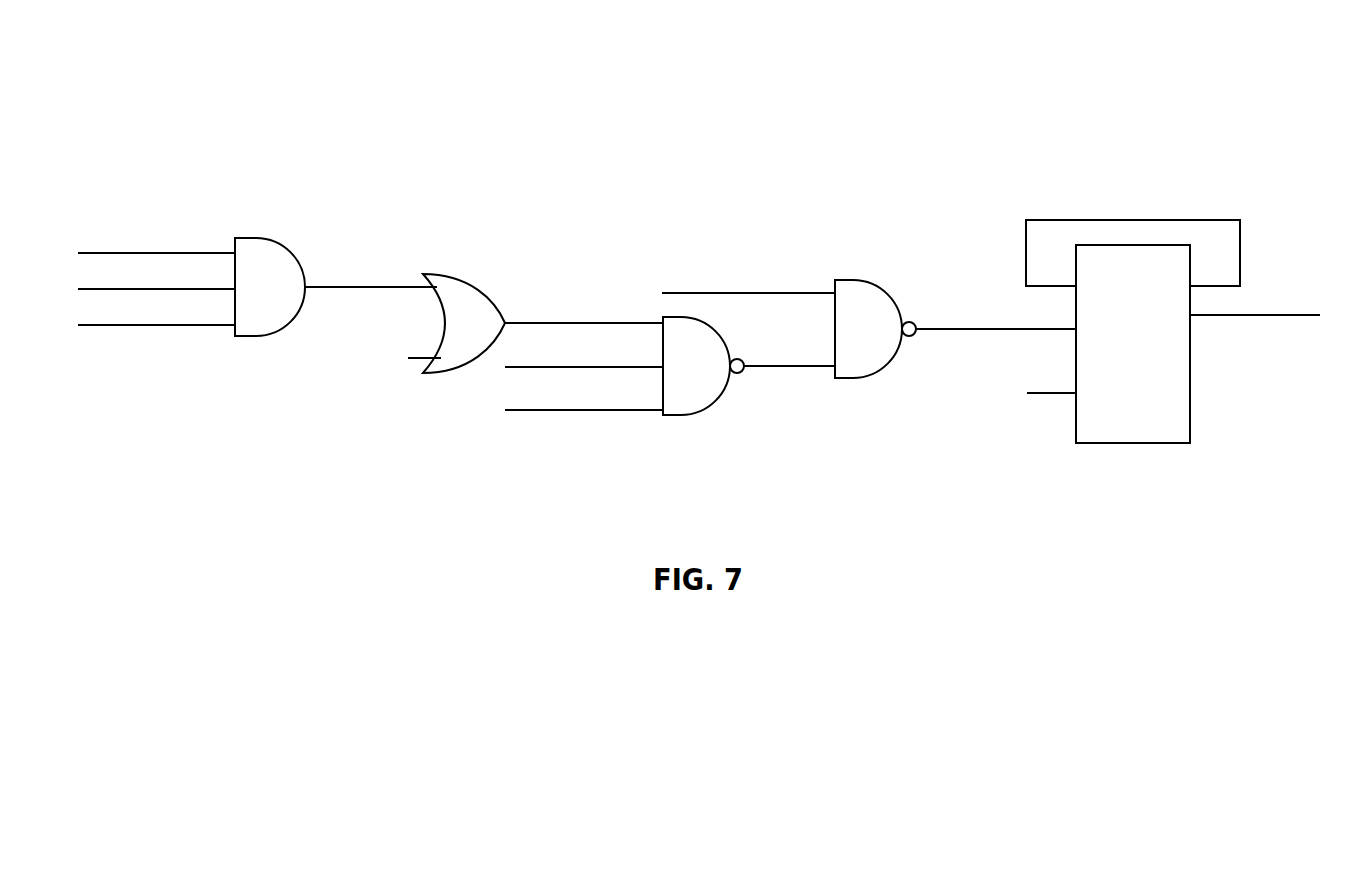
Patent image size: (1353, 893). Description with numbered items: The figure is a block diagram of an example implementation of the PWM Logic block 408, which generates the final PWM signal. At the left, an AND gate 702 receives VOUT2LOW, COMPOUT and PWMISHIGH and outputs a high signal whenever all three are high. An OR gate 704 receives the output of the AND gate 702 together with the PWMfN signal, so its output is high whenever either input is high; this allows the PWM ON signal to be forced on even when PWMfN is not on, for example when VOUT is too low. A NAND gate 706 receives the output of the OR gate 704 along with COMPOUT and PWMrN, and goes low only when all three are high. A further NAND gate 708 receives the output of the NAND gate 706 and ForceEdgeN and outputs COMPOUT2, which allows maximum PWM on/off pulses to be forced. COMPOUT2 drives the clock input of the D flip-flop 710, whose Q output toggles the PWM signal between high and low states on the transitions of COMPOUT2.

The PWM Logic block 408 is at (745, 68).
The AND gate 702 is at (298, 268).
The OR gate 704 is at (495, 290).
The NAND gate 706 is at (740, 393).
The NAND gate 708 is at (882, 378).
The D flip-flop 710 is at (1157, 452).